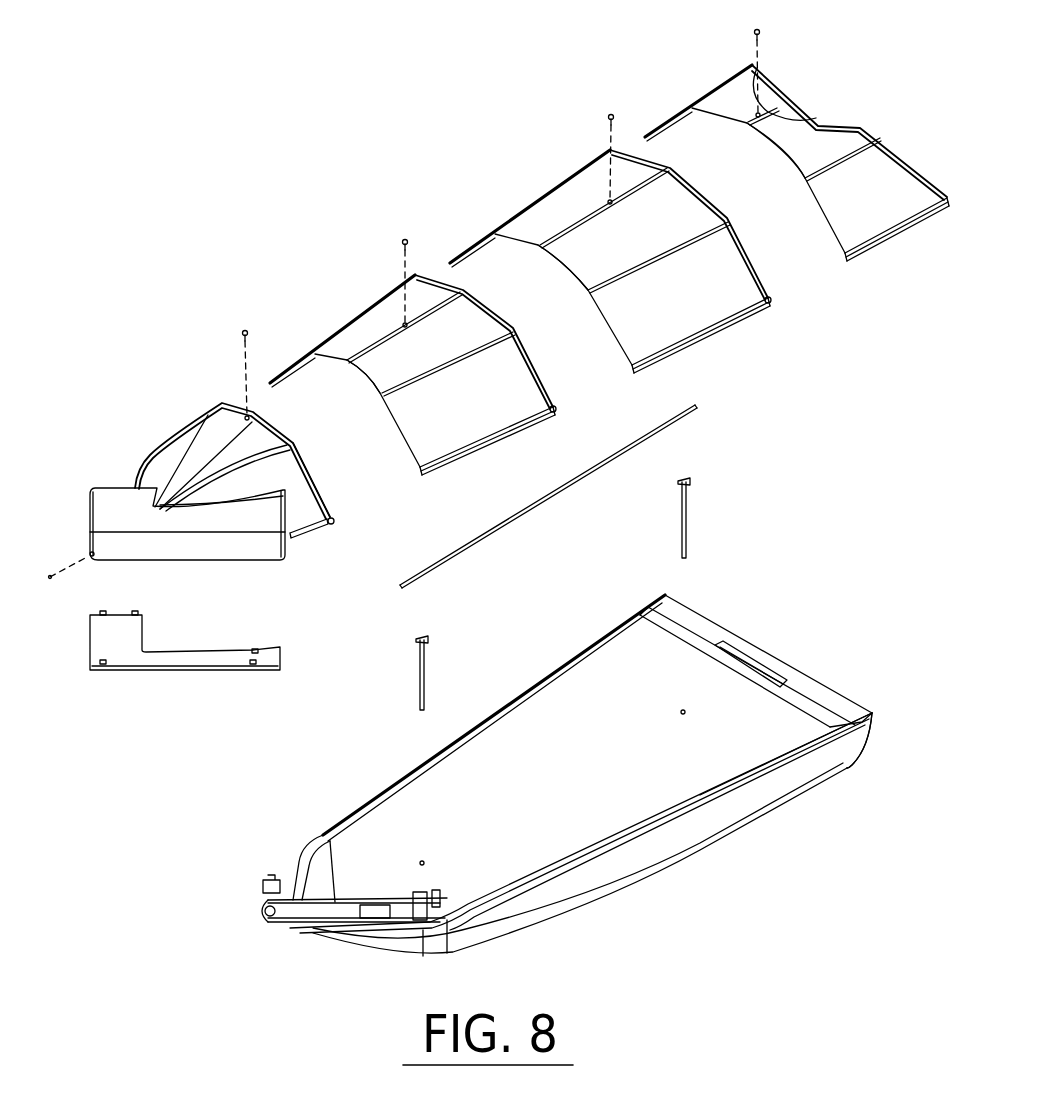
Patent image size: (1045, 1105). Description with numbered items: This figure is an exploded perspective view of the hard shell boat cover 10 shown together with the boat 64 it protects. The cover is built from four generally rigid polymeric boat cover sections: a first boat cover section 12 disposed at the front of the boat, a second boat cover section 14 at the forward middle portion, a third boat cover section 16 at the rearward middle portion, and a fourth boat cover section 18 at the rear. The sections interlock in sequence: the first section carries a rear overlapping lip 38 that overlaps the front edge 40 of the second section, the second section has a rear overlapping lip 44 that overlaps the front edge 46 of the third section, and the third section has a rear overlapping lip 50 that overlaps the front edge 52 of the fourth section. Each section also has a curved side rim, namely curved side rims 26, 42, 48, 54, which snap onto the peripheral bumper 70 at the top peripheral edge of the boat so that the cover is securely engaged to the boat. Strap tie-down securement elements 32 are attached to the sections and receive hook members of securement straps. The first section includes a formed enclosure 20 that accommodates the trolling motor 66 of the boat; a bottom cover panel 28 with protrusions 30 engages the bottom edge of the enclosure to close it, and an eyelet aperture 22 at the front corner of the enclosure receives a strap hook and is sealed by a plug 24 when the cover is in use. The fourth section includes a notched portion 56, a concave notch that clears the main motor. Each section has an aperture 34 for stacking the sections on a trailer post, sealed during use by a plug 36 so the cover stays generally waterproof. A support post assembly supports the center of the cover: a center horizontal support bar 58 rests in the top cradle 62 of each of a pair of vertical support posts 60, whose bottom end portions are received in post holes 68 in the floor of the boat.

The hard shell boat cover 10 is at (752, 408).
The first boat cover section 12 is at (213, 457).
The second boat cover section 14 is at (350, 320).
The third boat cover section 16 is at (558, 195).
The fourth boat cover section 18 is at (727, 90).
The formed enclosure 20 is at (113, 502).
The eyelet aperture 22 is at (93, 556).
The plug 24 is at (50, 578).
The curved side rim 26 is at (300, 541).
The bottom cover panel 28 is at (167, 665).
The protrusions 30 is at (103, 612).
The securement elements 32 is at (771, 304).
The aperture 34 is at (760, 116).
The plug 36 is at (760, 30).
The rear overlapping lip 38 is at (312, 472).
The front edge 40 is at (407, 412).
The curved side rim 42 is at (480, 455).
The rear overlapping lip 44 is at (542, 358).
The front edge 46 is at (560, 262).
The curved side rim 48 is at (718, 325).
The rear overlapping lip 50 is at (725, 215).
The front edge 52 is at (770, 145).
The curved side rim 54 is at (890, 228).
The notched portion 56 is at (787, 110).
The center horizontal support bar 58 is at (570, 490).
The vertical support posts 60 is at (686, 512).
The top cradle 62 is at (684, 481).
The boat 64 is at (643, 863).
The trolling motor 66 is at (303, 903).
The post holes 68 is at (683, 712).
The peripheral bumper 70 is at (777, 767).